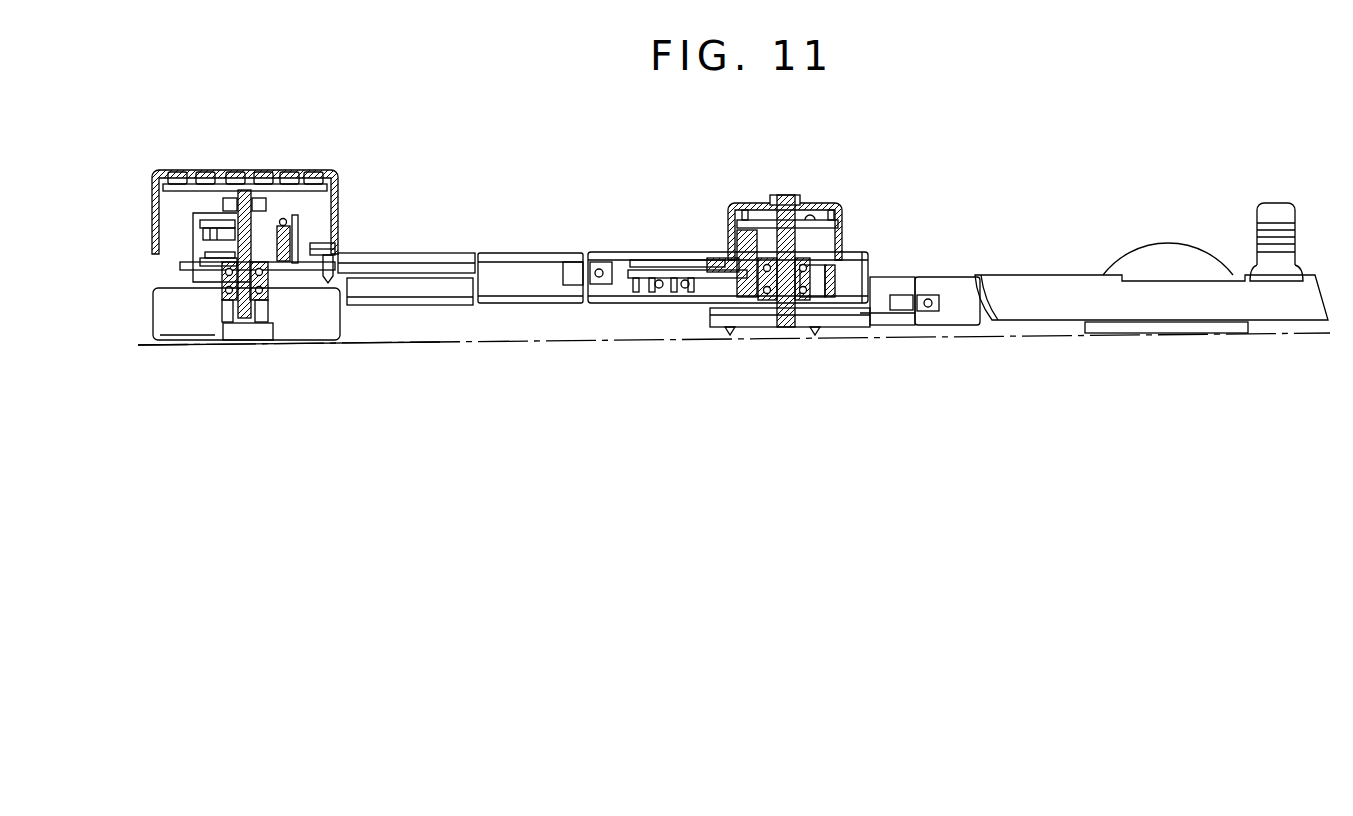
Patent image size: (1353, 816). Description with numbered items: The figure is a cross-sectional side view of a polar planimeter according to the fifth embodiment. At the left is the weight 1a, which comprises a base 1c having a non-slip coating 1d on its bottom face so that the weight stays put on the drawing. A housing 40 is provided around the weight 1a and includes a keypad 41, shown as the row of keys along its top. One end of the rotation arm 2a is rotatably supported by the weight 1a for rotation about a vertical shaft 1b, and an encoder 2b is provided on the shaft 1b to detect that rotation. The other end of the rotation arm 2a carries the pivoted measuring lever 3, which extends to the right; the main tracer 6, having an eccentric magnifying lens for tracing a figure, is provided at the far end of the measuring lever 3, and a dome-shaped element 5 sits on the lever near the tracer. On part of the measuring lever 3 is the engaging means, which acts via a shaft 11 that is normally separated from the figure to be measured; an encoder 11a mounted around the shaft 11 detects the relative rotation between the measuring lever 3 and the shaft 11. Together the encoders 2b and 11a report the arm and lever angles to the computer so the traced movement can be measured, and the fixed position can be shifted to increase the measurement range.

The housing 40 is at (153, 183).
The keypad 41 is at (266, 171).
The weight 1a is at (153, 222).
The shaft 1b is at (255, 320).
The base 1c is at (178, 325).
The non-slip coating 1d is at (205, 345).
The rotation arm 2a is at (415, 310).
The encoder 2b is at (300, 230).
The shaft 11 is at (786, 195).
The encoder 11a is at (842, 232).
The measuring lever 3 is at (1045, 275).
The dome member 5 is at (1165, 243).
The main tracer 6 is at (1095, 333).